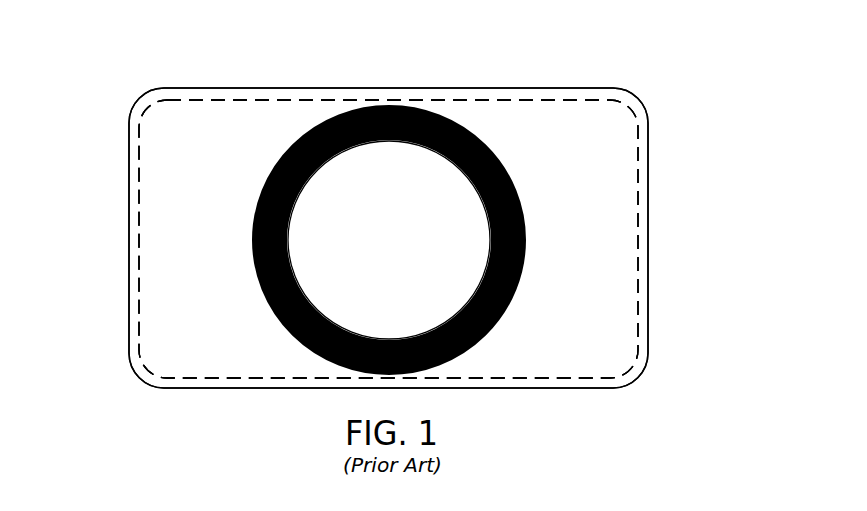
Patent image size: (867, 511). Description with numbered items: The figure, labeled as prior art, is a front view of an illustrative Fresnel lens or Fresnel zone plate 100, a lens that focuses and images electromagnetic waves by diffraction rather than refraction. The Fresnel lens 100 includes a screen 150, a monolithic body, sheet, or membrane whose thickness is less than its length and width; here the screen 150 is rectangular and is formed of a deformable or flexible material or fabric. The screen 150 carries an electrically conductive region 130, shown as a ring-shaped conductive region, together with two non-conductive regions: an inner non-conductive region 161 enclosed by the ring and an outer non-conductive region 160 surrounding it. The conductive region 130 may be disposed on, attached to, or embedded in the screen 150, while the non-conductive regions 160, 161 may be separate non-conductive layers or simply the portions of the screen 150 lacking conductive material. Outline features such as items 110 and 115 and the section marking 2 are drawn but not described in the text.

The Fresnel lens 100 is at (657, 52).
The housing 110 is at (643, 198).
The housing inner wall / interior boundary 115 is at (647, 272).
The electrically conductive region 130 is at (447, 118).
The screen 150 is at (172, 329).
The outer non-conductive region 160 is at (219, 125).
The inner non-conductive region 161 is at (388, 160).
The section line 2- 2 is at (165, 240).